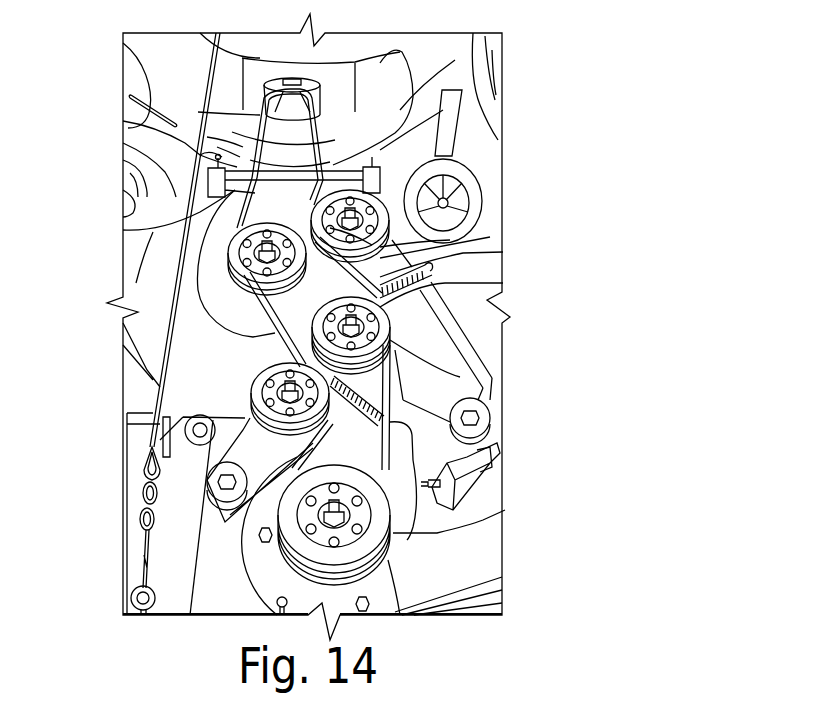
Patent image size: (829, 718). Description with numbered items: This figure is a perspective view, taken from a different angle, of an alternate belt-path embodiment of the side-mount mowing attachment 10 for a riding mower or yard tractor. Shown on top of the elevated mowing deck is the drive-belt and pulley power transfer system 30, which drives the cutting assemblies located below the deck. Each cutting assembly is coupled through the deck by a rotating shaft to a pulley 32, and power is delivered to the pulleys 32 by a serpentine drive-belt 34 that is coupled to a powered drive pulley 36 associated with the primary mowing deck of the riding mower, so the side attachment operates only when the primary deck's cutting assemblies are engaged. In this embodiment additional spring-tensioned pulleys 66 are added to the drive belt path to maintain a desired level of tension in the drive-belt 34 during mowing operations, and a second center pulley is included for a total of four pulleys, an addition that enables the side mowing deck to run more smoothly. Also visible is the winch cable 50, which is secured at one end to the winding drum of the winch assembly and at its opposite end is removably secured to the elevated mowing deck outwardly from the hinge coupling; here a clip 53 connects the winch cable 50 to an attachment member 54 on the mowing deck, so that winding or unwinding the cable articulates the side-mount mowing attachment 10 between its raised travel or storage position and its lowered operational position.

The side-mount mowing attachment 10 is at (477, 340).
The drive-belt and pulley power transfer system 30 is at (500, 362).
The pulley 32 is at (395, 207).
The serpentine drive-belt 34 is at (470, 250).
The powered drive pulley 36 is at (413, 63).
The winch cable 50 is at (173, 287).
The clip 53 is at (140, 480).
The attachment member 54 is at (131, 597).
The spring-tensioned pulley 66 is at (160, 383).